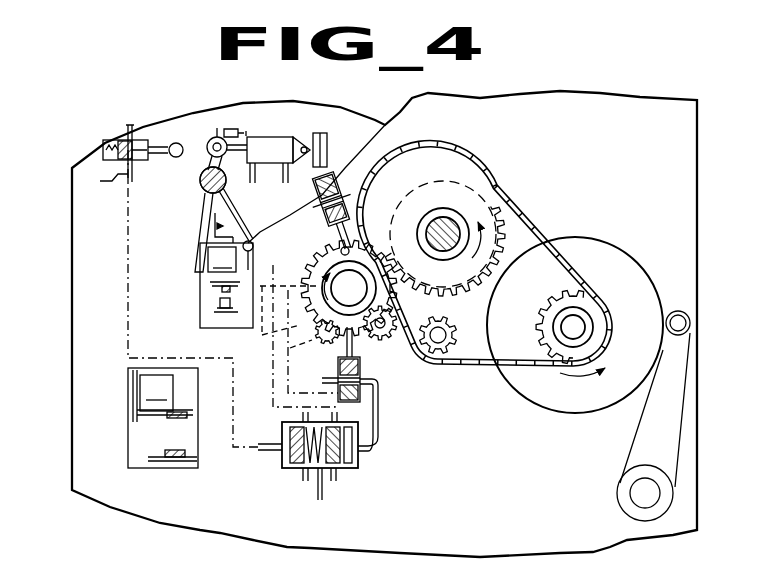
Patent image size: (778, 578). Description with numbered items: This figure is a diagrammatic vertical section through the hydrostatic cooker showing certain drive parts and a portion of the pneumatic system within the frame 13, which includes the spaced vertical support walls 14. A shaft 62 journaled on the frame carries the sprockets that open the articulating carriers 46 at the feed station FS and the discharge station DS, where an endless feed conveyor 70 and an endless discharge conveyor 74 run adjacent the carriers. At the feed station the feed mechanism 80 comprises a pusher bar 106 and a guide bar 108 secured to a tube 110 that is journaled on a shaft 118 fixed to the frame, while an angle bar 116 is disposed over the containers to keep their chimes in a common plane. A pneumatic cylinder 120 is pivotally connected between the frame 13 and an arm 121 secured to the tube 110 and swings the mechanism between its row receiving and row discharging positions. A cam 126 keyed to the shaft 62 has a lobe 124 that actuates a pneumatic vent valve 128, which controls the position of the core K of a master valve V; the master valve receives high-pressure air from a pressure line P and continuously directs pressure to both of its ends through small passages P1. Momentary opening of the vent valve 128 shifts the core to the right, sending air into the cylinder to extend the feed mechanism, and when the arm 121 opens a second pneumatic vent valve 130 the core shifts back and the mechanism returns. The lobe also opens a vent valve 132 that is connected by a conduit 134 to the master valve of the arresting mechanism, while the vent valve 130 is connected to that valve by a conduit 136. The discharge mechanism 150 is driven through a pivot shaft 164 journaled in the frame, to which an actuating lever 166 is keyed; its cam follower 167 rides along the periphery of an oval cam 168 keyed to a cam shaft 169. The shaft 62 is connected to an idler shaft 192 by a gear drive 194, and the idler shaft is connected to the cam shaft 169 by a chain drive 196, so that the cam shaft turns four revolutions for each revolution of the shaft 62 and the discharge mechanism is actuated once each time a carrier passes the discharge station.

The frame 13 is at (699, 167).
The vertical support walls 14 is at (200, 284).
The articulating carriers 46 is at (280, 354).
The shaft 62 is at (361, 299).
The feed conveyor 70 is at (210, 296).
The discharge conveyor 74 is at (183, 409).
The feed mechanism 80 is at (198, 212).
The pusher bar 106 is at (197, 252).
The guide bar 108 is at (251, 240).
The tube 110 is at (200, 188).
The angle bar 116 is at (210, 233).
The shaft 118 is at (200, 180).
The pneumatic cylinder 120 is at (270, 134).
The arm 121 is at (207, 157).
The lobe 124 is at (388, 334).
The cam 126 is at (390, 274).
The pneumatic vent valve 128 is at (362, 375).
The second pneumatic vent valve 130 is at (120, 140).
The vent valve 132 is at (340, 178).
The conduit 134 is at (340, 200).
The conduit 136 is at (100, 181).
The discharge mechanism 150 is at (695, 388).
The pivot shaft 164 is at (637, 493).
The actuating lever 166 is at (673, 442).
The cam follower 167 is at (688, 322).
The oval cam 168 is at (603, 243).
The cam shaft 169 is at (572, 324).
The idler shaft 192 is at (445, 217).
The gear drive 194 is at (320, 342).
The chain drive 196 is at (542, 320).
The discharge station DS is at (124, 402).
The feed station FS is at (160, 243).
The core K is at (282, 433).
The master valve V is at (375, 458).
The small passages P1 is at (297, 475).
The pressure line P is at (322, 498).